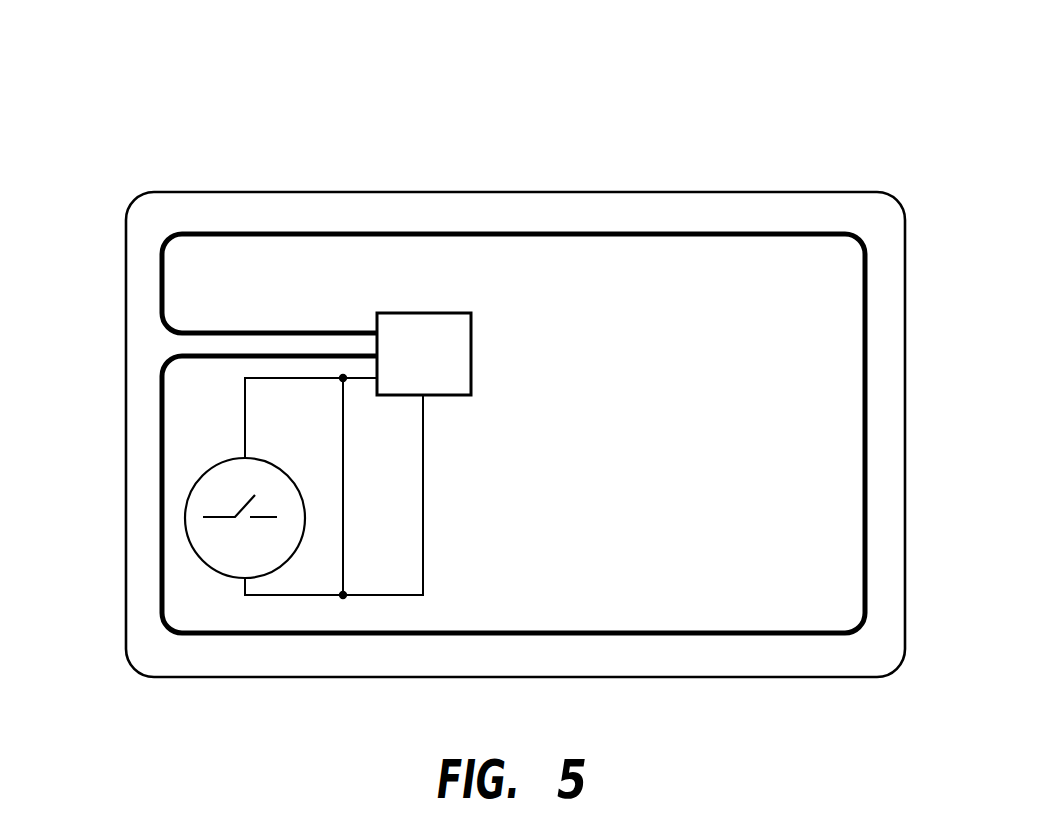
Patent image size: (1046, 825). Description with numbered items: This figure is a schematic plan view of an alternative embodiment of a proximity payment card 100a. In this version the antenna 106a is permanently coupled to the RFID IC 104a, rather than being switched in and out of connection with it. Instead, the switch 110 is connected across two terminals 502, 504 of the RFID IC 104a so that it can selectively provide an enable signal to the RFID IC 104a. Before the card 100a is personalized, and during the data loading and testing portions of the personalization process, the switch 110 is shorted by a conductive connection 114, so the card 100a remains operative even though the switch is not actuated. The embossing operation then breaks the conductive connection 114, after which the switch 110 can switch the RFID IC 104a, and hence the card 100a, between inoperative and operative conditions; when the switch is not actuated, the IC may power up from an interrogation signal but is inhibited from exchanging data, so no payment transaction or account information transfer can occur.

The proximity payment card 100a is at (466, 103).
The antenna 106a is at (549, 234).
The RFID IC 104a is at (422, 313).
The terminal 502 is at (377, 381).
The terminal 504 is at (426, 395).
The conductive connection 114 is at (343, 478).
The switch 110 is at (186, 516).